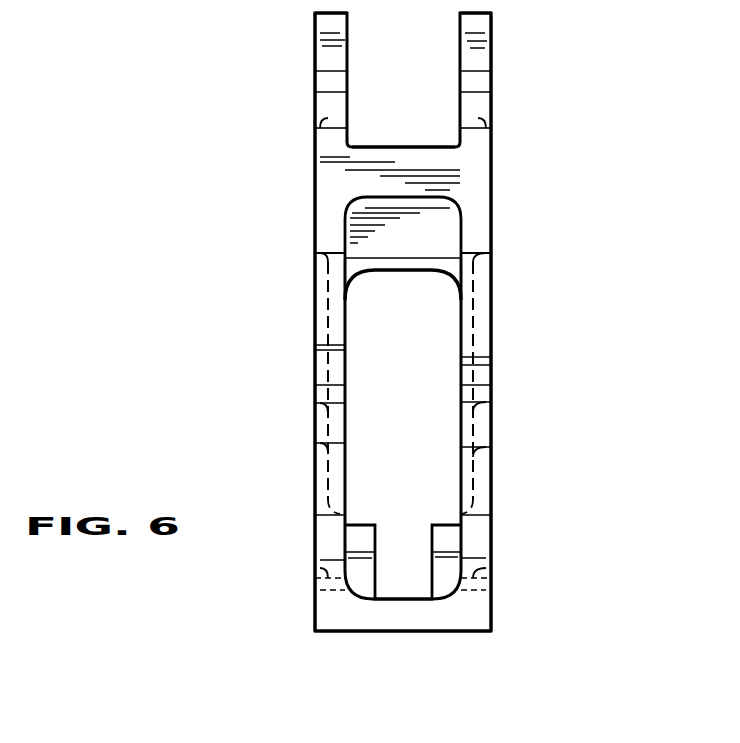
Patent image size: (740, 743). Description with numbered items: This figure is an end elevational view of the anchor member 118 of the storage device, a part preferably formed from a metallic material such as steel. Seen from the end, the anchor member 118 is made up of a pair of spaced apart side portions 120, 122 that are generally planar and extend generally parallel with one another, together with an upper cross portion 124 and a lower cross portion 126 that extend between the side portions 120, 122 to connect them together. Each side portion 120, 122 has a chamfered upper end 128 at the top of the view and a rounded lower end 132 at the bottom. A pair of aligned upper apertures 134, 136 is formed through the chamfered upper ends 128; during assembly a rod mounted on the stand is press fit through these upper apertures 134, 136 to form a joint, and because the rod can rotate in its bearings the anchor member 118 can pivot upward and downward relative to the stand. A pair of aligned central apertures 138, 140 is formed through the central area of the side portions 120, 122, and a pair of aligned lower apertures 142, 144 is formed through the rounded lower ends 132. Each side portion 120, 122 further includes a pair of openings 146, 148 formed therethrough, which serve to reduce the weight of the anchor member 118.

The anchor member 118 is at (184, 104).
The side portion 120 is at (308, 229).
The side portion 122 is at (502, 203).
The upper cross portion 124 is at (398, 165).
The lower cross portion 126 is at (430, 630).
The chamfered upper end 128 is at (315, 22).
The rounded lower end 132 is at (313, 622).
The upper aperture 134 is at (310, 115).
The upper aperture 136 is at (485, 115).
The central aperture 138 is at (315, 405).
The central aperture 140 is at (492, 405).
The lower aperture 142 is at (312, 568).
The lower aperture 144 is at (488, 571).
The opening 146 is at (315, 268).
The opening 148 is at (312, 452).